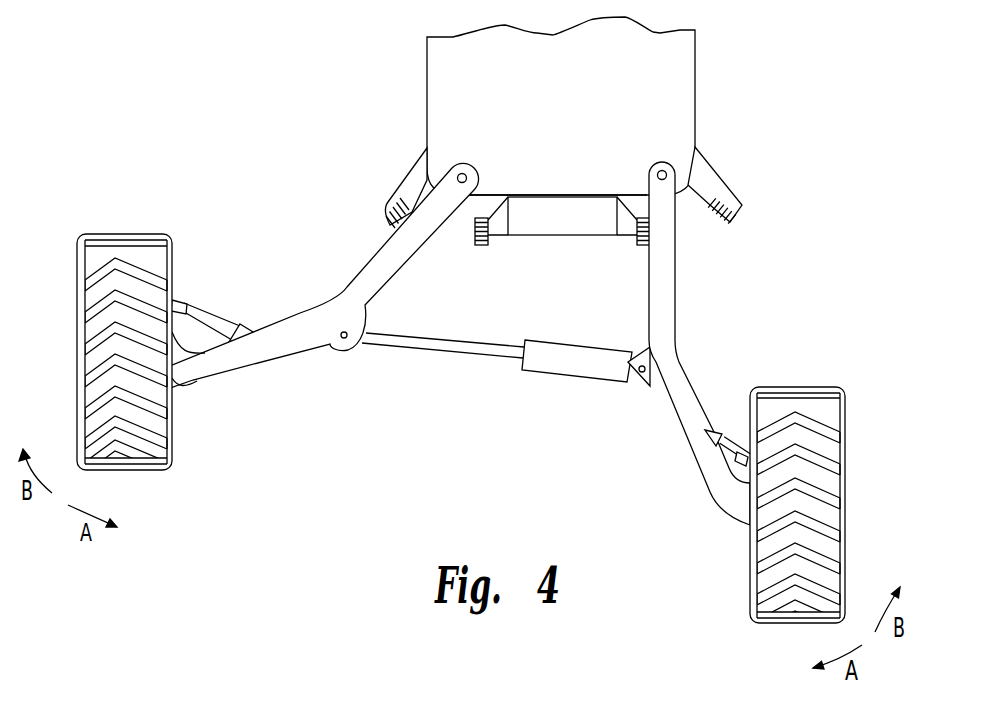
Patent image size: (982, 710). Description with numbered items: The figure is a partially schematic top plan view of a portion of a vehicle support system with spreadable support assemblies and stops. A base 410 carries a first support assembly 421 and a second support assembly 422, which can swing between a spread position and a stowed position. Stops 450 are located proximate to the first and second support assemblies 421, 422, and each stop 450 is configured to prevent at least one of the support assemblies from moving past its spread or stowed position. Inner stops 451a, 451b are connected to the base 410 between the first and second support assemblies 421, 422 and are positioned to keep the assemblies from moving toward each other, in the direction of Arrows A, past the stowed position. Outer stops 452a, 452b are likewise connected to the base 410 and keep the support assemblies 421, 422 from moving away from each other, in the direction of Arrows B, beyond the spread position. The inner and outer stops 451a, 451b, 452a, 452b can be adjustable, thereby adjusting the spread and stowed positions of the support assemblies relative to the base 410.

The base 410 is at (447, 79).
The stops 450 is at (481, 385).
The outer stop 452a is at (390, 223).
The outer stop 452b is at (720, 222).
The first support assembly 421 is at (352, 268).
The second support assembly 422 is at (677, 324).
The inner stop 451a is at (476, 239).
The inner stop 451b is at (640, 244).